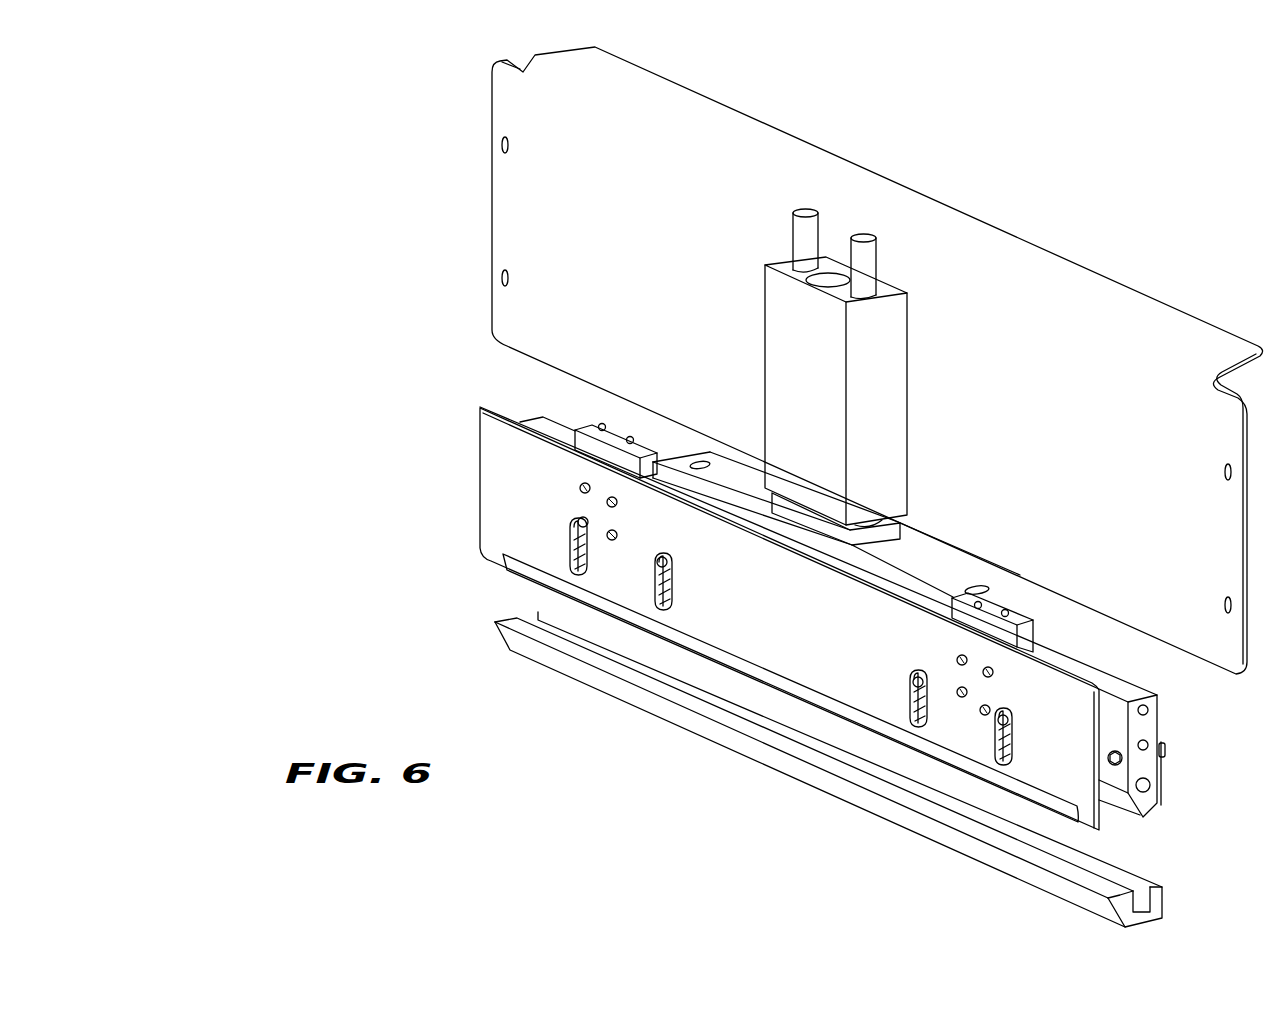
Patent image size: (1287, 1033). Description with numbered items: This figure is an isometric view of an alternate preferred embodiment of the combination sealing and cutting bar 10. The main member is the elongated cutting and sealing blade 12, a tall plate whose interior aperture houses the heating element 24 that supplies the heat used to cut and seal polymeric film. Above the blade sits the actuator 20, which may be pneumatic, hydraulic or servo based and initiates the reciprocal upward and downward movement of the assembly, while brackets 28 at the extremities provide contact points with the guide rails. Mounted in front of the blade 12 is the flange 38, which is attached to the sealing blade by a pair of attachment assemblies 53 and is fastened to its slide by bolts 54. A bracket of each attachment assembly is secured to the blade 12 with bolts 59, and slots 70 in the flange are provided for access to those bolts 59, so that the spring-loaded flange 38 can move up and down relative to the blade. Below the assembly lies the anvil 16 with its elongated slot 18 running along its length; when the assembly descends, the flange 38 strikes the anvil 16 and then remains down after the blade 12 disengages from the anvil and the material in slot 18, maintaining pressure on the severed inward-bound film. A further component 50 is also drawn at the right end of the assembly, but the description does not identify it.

The combination sealing and cutting bar 10 is at (400, 305).
The elongated cutting and sealing blade 12 is at (1147, 727).
The anvil 16 is at (1162, 913).
The elongated slot 18 is at (1140, 900).
The actuator 20 is at (895, 350).
The heating element 24 is at (1151, 786).
The brackets 28 is at (877, 360).
The flange 38 is at (1092, 817).
The support bar 50 is at (1023, 627).
The attachment assemblies 53 is at (620, 410).
The bolts 54 is at (585, 488).
The bolts 59 is at (578, 531).
The slots 70 is at (587, 561).